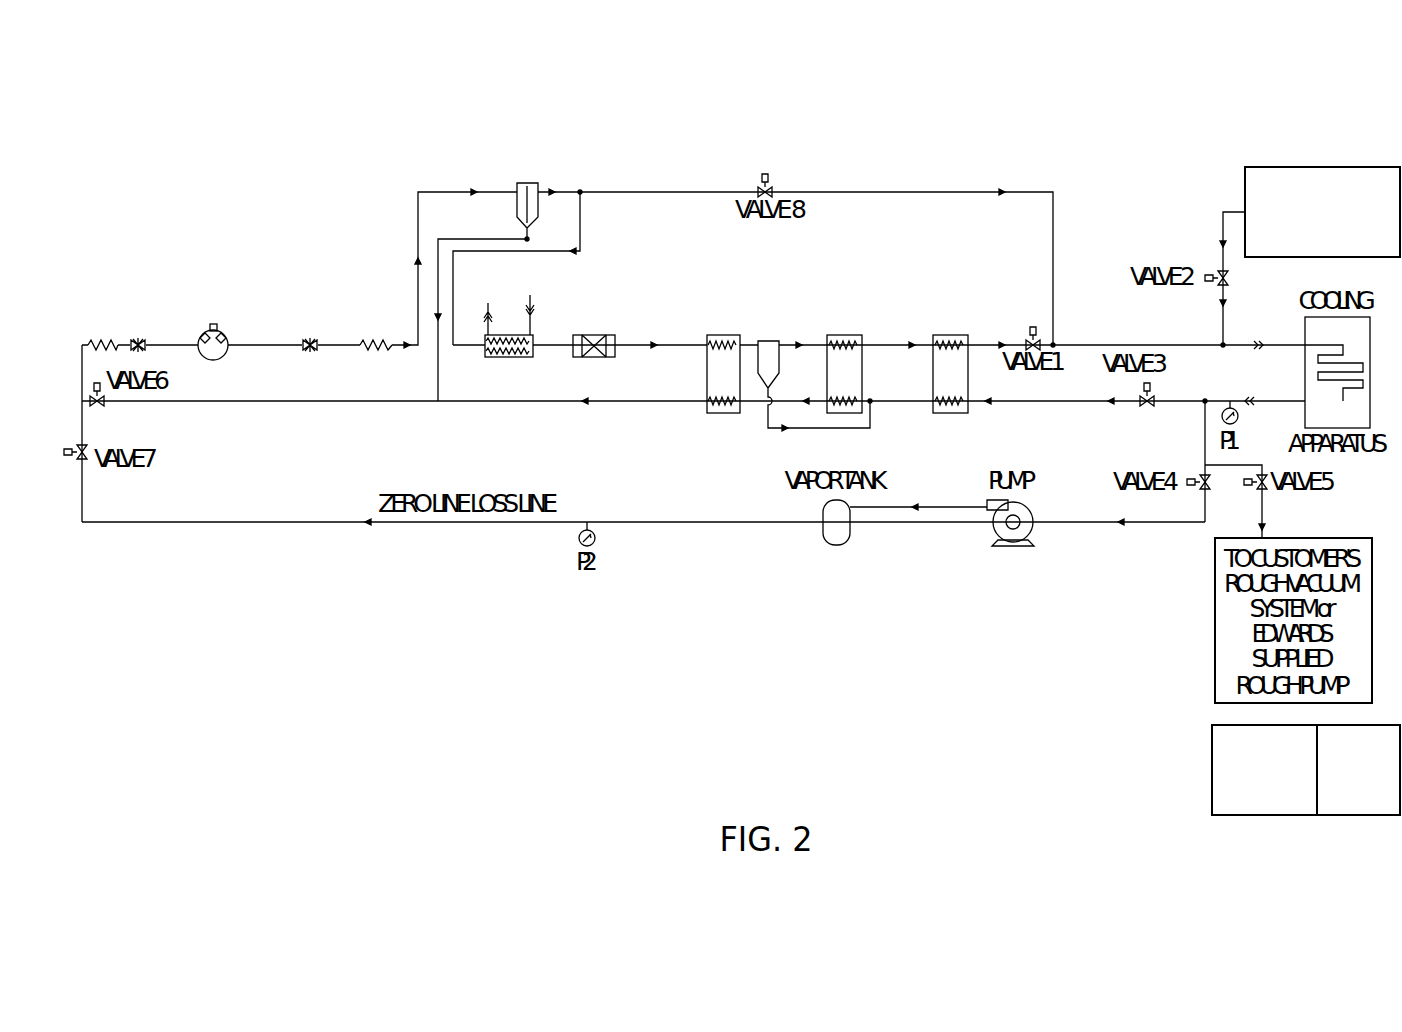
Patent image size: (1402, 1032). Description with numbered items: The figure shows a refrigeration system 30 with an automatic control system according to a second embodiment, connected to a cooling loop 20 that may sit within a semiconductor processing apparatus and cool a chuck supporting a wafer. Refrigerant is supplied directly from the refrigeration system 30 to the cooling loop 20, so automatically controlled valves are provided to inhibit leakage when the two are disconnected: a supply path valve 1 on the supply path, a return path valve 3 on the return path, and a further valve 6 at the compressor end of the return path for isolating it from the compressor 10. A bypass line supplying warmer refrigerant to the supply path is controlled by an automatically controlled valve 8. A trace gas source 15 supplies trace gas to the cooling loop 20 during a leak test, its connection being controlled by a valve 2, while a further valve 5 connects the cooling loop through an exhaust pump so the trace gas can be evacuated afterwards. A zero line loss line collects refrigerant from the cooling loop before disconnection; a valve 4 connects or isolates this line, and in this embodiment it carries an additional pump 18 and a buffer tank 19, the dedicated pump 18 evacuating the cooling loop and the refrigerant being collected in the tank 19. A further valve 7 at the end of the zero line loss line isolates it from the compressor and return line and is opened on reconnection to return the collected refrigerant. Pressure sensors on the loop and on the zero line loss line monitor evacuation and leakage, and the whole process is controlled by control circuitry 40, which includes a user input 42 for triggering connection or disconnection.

The supply path valve 1 is at (1031, 329).
The valve 2 is at (1217, 270).
The return path valve 3 is at (1143, 405).
The valve 4 is at (1203, 490).
The further valve 5 is at (1265, 490).
The further valve 6 is at (101, 404).
The further valve 7 is at (85, 460).
The automatically controlled valve 8 is at (764, 173).
The compressor 10 is at (213, 323).
The trace gas source 15 is at (1312, 167).
The pump 18 is at (834, 548).
The buffer tank 19 is at (1008, 548).
The cooling loop 20 is at (1306, 325).
The refrigeration system 30 is at (888, 161).
The control circuitry 40 is at (1264, 770).
The user input 42 is at (1358, 770).